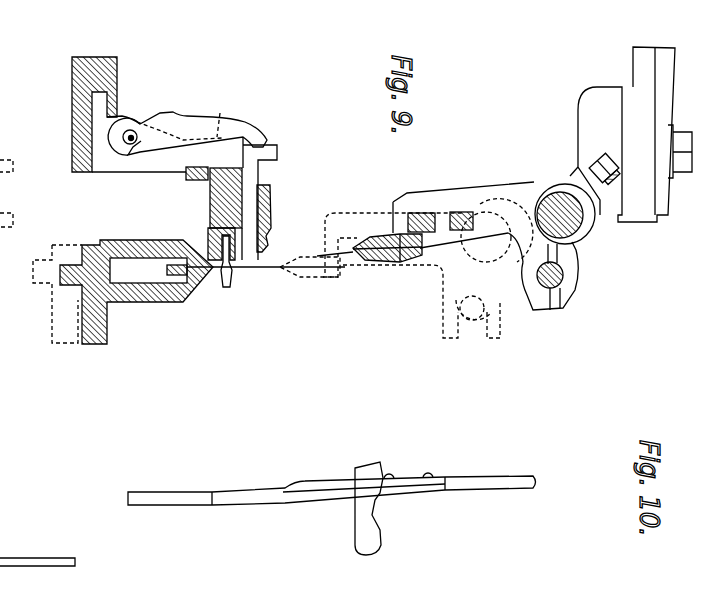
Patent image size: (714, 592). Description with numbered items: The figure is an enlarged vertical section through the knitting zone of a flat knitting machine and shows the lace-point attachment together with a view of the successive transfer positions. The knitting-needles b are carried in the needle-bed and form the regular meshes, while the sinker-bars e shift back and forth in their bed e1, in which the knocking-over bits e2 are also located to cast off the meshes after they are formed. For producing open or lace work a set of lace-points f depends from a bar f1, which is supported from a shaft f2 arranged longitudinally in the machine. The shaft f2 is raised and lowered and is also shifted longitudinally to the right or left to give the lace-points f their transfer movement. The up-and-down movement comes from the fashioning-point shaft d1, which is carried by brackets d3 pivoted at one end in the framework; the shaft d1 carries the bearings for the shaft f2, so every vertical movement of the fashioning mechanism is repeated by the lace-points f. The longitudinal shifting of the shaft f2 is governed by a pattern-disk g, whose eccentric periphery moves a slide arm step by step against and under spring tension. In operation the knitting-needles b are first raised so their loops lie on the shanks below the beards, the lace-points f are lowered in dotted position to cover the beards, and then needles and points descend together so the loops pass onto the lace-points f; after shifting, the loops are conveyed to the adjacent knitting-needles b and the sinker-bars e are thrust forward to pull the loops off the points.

In FIG. 9, the knitting-needles b is at (265, 269).
In FIG. 10, the knitting-needles b is at (238, 497).
In FIG. 9, the sinker-bars e is at (253, 163).
In FIG. 9, the bed e1 is at (270, 213).
In FIG. 9, the knocking-over bits e2 is at (228, 287).
In FIG. 10, the knocking-over bits e2 is at (363, 537).
In FIG. 9, the lace-points f is at (338, 252).
In FIG. 10, the lace-points f is at (427, 487).
In FIG. 9, the bar f1 is at (383, 262).
In FIG. 9, the shaft f2 is at (560, 283).
In FIG. 9, the shaft d1 is at (577, 223).
In FIG. 9, the brackets d3 is at (643, 72).
In FIG. 9, the fastening screws h is at (458, 213).
In FIG. 10, the pattern-disk g is at (395, 498).